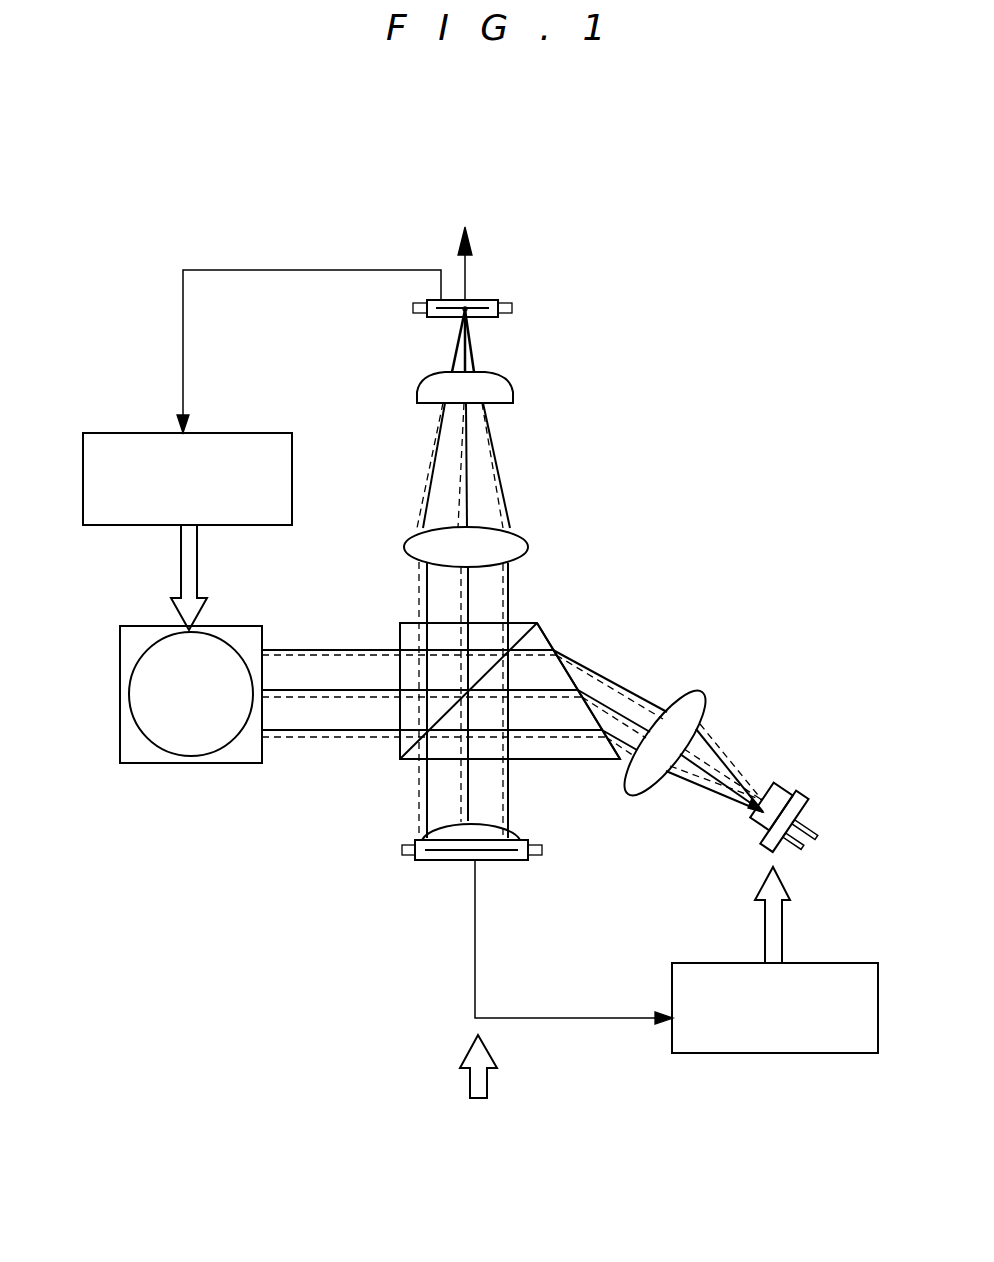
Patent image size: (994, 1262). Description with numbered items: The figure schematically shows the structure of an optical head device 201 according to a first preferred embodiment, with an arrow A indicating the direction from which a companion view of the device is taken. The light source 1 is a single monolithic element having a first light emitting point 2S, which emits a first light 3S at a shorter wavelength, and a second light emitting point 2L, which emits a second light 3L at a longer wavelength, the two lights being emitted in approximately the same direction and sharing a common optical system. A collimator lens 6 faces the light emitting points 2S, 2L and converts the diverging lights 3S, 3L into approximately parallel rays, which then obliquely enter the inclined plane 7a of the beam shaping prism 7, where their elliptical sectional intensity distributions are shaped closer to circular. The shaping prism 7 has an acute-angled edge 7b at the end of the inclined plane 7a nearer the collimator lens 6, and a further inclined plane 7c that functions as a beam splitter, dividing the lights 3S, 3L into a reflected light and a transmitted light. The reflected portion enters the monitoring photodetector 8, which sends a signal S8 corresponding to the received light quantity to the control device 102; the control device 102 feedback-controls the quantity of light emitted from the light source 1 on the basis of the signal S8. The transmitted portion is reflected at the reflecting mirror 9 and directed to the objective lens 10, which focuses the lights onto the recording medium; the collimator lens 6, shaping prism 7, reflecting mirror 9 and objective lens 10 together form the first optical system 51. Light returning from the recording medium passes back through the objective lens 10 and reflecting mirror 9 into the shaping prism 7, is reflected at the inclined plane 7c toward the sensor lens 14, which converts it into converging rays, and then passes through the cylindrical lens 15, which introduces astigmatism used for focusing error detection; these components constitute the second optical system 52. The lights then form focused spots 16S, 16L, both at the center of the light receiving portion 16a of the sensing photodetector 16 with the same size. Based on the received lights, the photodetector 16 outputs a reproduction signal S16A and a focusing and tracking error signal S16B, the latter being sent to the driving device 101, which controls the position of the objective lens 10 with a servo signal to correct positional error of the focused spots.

The light source 1 is at (802, 793).
The first light emitting point 2S is at (750, 812).
The second light emitting point 2L is at (770, 782).
The first light 3S is at (343, 650).
The second light 3L is at (297, 742).
The collimator lens 6 is at (693, 698).
The beam shaping prism 7 is at (555, 760).
The inclined plane (plane of incidence) 7a is at (547, 640).
The acute-angled edge 7b is at (622, 768).
The inclined plane (beam splitter) 7c is at (523, 638).
The monitoring photodetector 8 is at (443, 863).
The reflecting mirror 9 is at (144, 753).
The objective lens 10 is at (197, 745).
The sensor lens 14 is at (520, 547).
The cylindrical lens 15 is at (500, 390).
The sensing photodetector 16 is at (487, 298).
The light receiving portion 16a is at (477, 314).
The focused spot 16S is at (485, 318).
The focused spot 16L is at (453, 318).
The first optical system 51 is at (623, 667).
The second optical system 52 is at (418, 470).
The driving device 101 is at (133, 433).
The control device 102 is at (822, 963).
The optical head device 201 is at (118, 269).
The reproduction signal S16A is at (454, 249).
The focusing and tracking error signal S16B is at (309, 334).
The signal S8 is at (574, 942).
The arrow A is at (487, 1080).